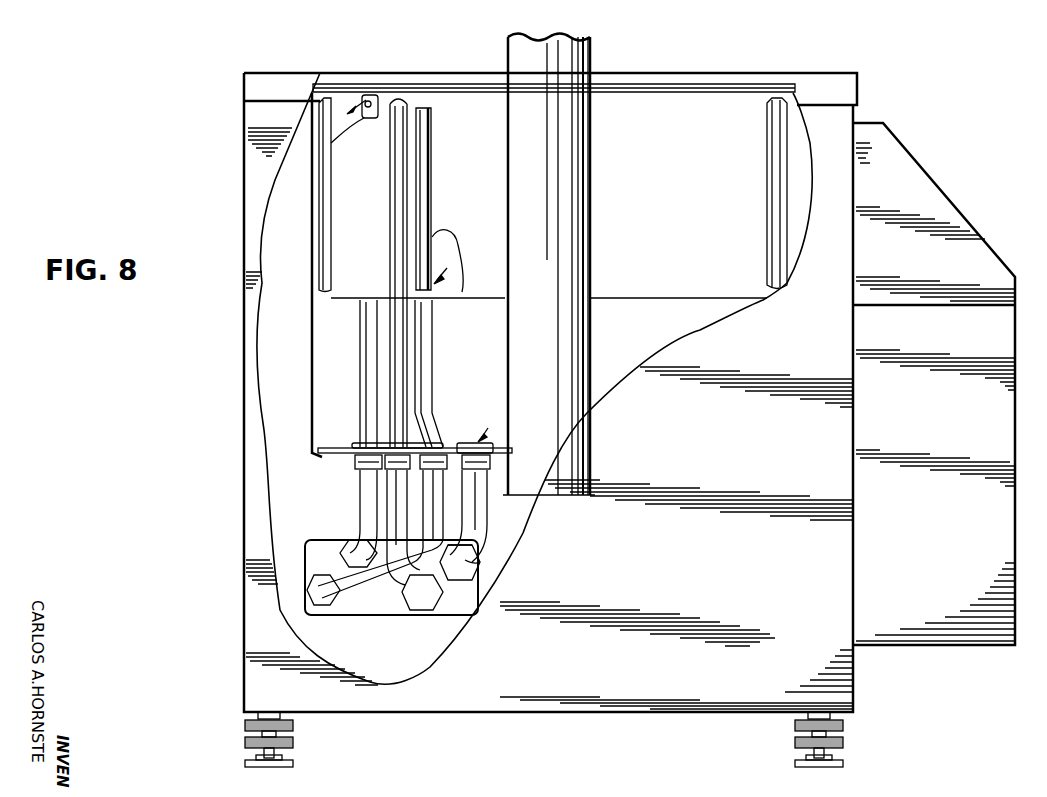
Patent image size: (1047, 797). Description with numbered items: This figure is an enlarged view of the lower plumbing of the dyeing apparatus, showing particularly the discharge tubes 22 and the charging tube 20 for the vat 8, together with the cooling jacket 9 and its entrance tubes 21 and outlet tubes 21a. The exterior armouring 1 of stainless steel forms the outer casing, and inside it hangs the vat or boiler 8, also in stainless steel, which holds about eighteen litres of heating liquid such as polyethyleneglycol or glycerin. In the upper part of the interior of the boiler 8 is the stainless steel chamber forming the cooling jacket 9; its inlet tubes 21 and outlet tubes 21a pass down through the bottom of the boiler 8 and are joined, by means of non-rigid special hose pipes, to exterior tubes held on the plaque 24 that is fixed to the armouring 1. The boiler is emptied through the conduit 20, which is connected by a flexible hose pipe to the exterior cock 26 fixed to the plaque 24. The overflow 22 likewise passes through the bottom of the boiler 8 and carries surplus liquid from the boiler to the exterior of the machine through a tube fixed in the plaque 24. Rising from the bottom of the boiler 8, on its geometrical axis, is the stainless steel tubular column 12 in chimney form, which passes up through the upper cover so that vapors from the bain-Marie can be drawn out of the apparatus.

The exterior armouring 1 is at (244, 491).
The vat or boiler 8 is at (311, 359).
The cooling jacket 9 is at (322, 252).
The tubular column 12 is at (577, 242).
The charging tube 20 is at (497, 453).
The entrance tubes 21 is at (355, 457).
The outlet tubes 21a is at (438, 450).
The discharge tubes 22 is at (400, 463).
The plaque 24 is at (378, 598).
The exterior cock 26 is at (484, 573).